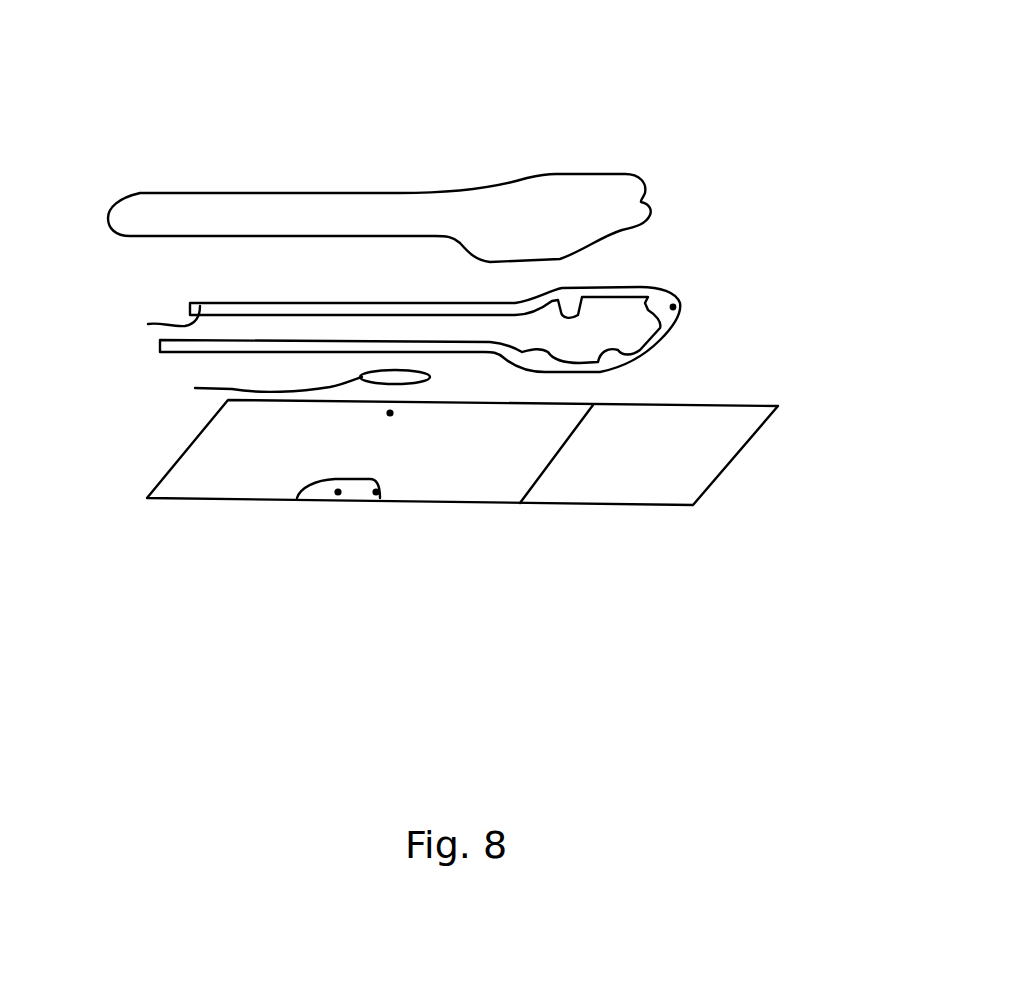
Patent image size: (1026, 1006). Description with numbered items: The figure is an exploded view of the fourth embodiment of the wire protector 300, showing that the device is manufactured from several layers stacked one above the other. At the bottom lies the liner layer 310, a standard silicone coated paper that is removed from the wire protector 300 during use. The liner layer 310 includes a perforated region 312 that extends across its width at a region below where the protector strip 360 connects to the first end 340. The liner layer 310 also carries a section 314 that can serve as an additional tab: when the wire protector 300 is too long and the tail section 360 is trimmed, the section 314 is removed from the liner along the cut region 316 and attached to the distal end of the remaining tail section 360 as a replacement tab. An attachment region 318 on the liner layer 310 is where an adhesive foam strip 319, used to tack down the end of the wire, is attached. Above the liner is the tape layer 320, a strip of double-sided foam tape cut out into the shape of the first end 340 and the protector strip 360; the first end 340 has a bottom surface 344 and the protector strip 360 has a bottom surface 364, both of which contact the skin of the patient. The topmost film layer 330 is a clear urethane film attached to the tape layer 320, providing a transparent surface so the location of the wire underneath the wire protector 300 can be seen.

The wire protector 300 is at (300, 60).
The liner layer 310 is at (800, 396).
The perforated region 312 is at (520, 501).
The section 314 is at (338, 492).
The cut region 316 is at (375, 492).
The attachment region 318 is at (390, 413).
The adhesive foam strip 319 is at (272, 390).
The tape layer 320 is at (704, 312).
The film layer 330 is at (618, 150).
The first end 340 is at (673, 307).
The bottom surface 344 is at (630, 370).
The protector strip 360 is at (440, 303).
The bottom surface 364 is at (132, 321).